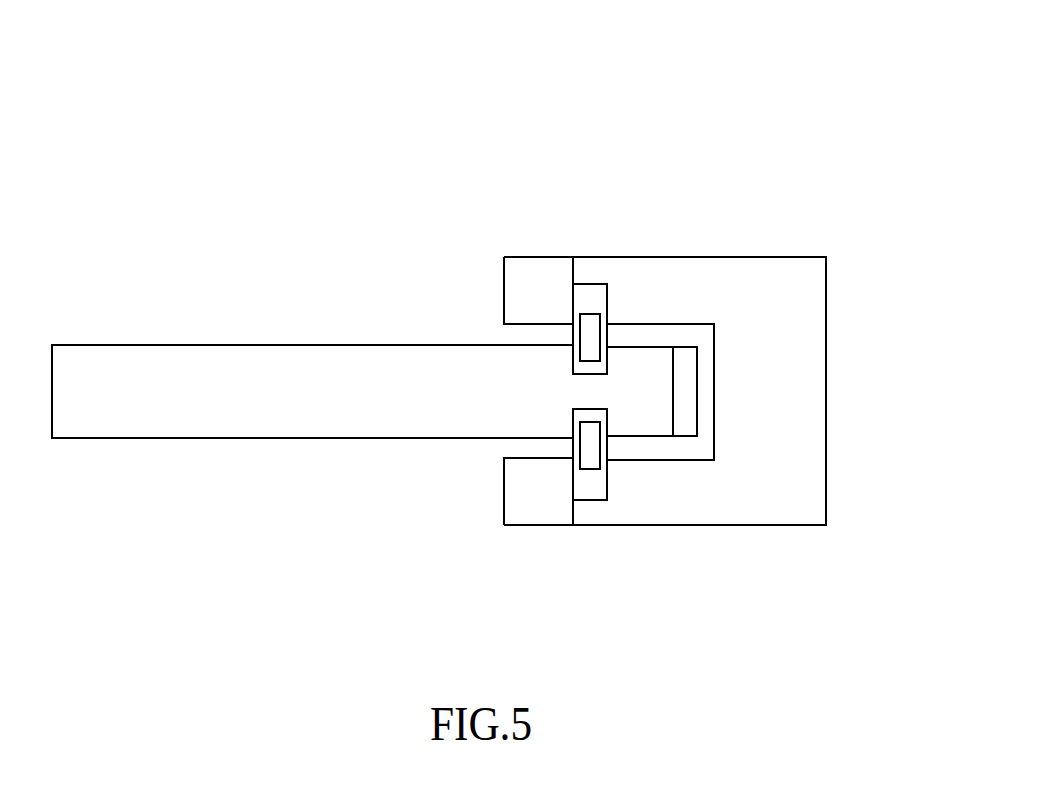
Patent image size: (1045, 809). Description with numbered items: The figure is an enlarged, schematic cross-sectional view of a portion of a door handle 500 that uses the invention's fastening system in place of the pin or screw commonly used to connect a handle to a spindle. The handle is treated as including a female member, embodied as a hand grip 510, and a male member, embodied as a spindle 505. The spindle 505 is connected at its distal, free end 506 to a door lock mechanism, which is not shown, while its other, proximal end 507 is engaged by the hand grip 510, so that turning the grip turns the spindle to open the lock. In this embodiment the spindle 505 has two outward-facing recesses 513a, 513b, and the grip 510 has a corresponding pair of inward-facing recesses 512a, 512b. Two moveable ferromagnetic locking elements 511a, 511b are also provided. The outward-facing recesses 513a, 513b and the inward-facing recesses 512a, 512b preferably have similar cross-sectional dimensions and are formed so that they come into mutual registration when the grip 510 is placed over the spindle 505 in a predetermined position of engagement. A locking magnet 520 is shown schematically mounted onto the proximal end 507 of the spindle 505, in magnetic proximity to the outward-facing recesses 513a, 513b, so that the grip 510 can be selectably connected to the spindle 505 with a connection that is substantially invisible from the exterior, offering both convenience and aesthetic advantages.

The door handle 500 is at (797, 100).
The spindle 505 is at (288, 403).
The distal, free end 506 is at (90, 469).
The proximal end 507 is at (659, 450).
The hand grip 510 is at (797, 402).
The moveable ferromagnetic locking element 511a is at (592, 458).
The moveable ferromagnetic locking element 511b is at (592, 326).
The inward-facing recess 512a is at (583, 488).
The inward-facing recess 512b is at (600, 298).
The outward-facing recess 513a is at (572, 425).
The outward-facing recess 513b is at (572, 358).
The locking magnet 520 is at (685, 347).